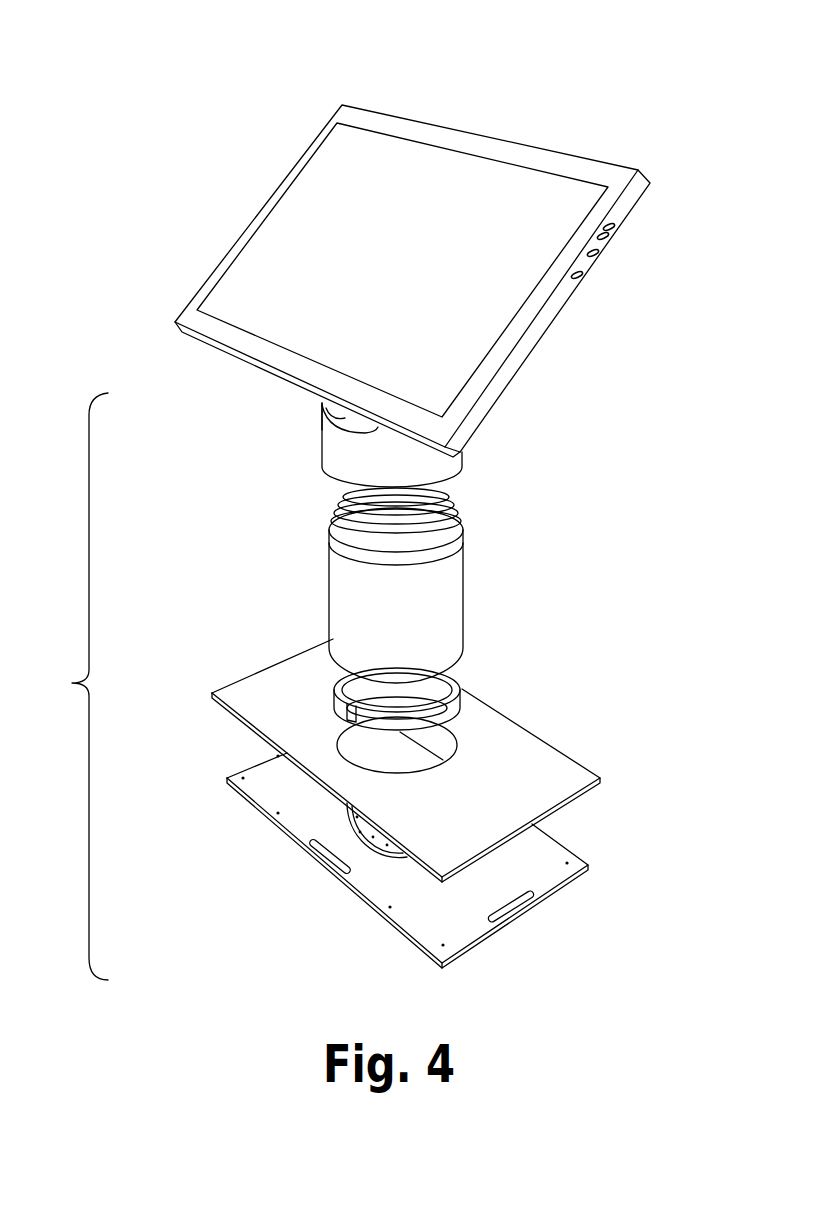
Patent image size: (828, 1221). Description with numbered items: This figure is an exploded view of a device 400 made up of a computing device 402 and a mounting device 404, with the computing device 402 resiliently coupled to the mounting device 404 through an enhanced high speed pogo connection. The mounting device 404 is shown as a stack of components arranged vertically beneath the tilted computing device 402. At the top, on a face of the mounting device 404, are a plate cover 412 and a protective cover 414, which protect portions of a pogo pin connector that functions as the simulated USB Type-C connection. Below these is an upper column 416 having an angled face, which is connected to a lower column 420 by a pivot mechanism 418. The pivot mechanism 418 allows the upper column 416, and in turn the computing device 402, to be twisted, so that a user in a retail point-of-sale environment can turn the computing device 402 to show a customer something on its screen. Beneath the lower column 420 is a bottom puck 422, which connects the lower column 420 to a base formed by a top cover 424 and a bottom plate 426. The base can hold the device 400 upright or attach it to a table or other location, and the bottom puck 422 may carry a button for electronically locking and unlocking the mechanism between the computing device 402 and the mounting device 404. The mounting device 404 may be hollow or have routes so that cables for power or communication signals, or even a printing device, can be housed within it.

The device 400 is at (613, 78).
The computing device 402 is at (562, 312).
The mounting device 404 is at (70, 686).
The plate cover 412 is at (320, 405).
The protective cover 414 is at (318, 423).
The upper column 416 is at (340, 460).
The pivot mechanism 418 is at (325, 495).
The lower column 420 is at (337, 596).
The bottom puck 422 is at (345, 712).
The top cover 424 is at (280, 714).
The bottom plate 426 is at (280, 794).